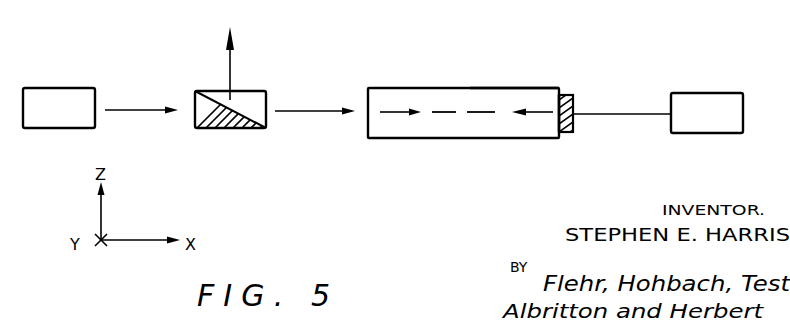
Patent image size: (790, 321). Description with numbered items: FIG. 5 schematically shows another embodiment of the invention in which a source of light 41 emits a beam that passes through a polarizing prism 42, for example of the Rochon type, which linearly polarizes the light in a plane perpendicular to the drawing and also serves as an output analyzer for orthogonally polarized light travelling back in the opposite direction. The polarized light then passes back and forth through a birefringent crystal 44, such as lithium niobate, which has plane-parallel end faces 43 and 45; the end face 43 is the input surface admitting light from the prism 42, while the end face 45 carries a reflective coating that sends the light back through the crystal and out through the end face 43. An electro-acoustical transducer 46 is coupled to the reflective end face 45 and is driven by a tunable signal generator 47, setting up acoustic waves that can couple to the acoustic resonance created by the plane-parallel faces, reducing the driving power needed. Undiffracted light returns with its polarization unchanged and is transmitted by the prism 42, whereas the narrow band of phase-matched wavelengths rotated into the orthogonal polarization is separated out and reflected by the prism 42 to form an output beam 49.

The source of light 41 is at (63, 98).
The polarizing prism 42 is at (230, 128).
The end face 43 is at (358, 135).
The birefringent crystal 44 is at (521, 80).
The end face 45 is at (558, 120).
The electro-acoustical transducer 46 is at (567, 133).
The signal generator 47 is at (705, 106).
The output beam 49 is at (231, 66).